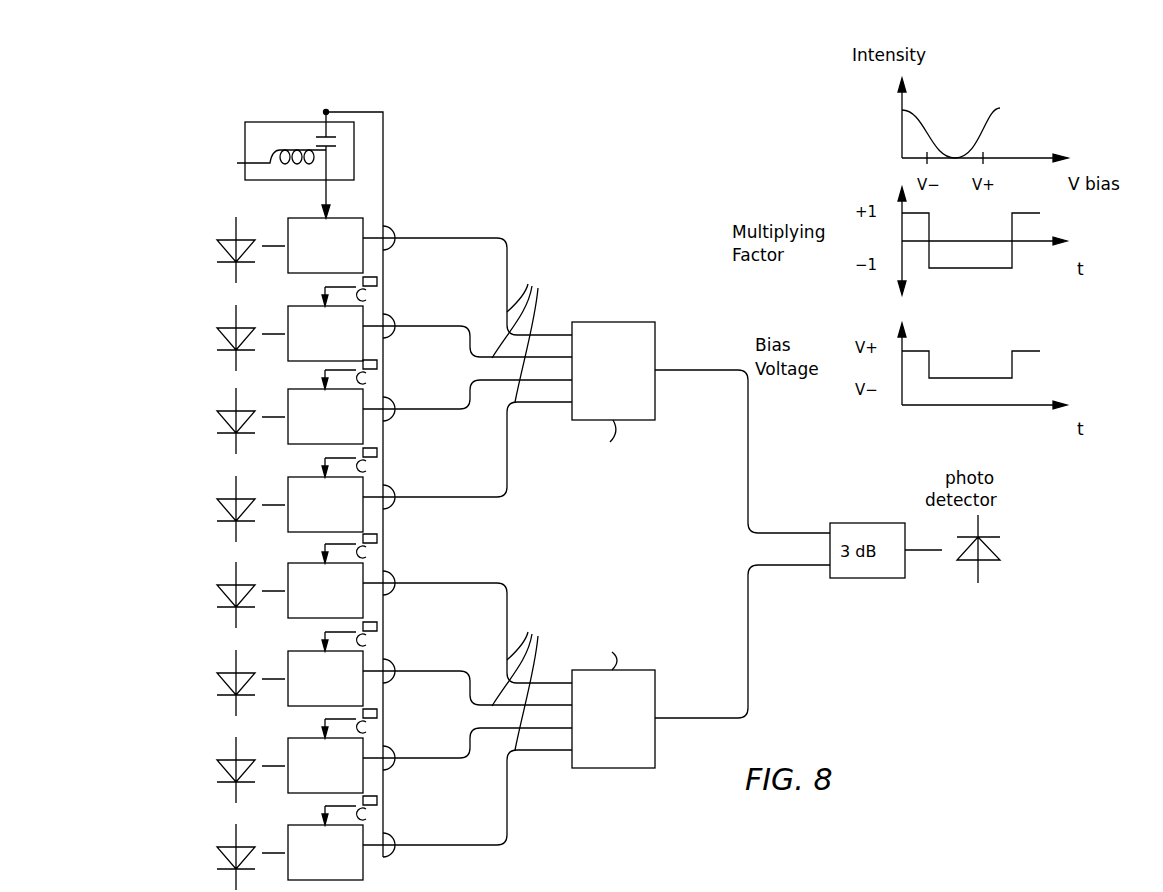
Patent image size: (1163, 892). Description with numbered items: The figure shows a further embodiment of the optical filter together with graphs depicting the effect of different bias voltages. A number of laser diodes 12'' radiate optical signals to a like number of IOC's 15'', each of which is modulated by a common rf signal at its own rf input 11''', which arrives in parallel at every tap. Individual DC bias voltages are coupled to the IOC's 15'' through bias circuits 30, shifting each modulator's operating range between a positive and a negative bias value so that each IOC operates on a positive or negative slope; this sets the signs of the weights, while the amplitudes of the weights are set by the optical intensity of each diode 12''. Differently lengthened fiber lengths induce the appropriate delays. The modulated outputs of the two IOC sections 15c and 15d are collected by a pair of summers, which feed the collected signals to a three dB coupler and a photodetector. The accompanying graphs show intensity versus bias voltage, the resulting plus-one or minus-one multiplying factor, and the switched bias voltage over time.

The rf input 11''' is at (329, 136).
The bias circuit 30 is at (258, 122).
The diodes 12'' is at (193, 551).
The IOC 15'' is at (306, 549).
The IOC section 15c is at (570, 203).
The IOC section 15d is at (565, 596).